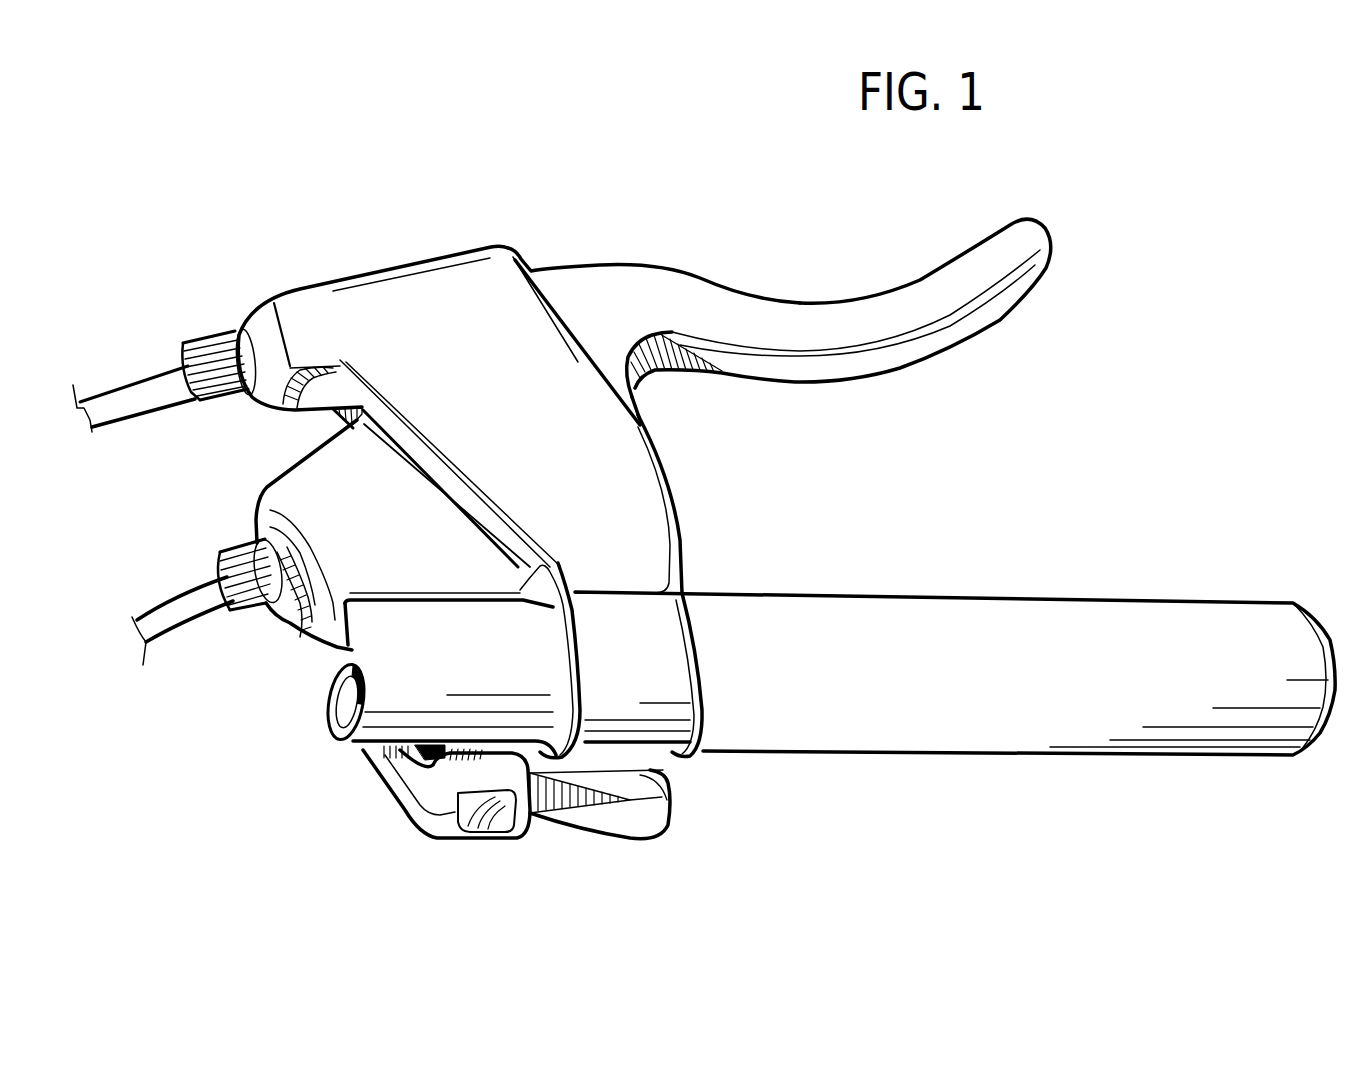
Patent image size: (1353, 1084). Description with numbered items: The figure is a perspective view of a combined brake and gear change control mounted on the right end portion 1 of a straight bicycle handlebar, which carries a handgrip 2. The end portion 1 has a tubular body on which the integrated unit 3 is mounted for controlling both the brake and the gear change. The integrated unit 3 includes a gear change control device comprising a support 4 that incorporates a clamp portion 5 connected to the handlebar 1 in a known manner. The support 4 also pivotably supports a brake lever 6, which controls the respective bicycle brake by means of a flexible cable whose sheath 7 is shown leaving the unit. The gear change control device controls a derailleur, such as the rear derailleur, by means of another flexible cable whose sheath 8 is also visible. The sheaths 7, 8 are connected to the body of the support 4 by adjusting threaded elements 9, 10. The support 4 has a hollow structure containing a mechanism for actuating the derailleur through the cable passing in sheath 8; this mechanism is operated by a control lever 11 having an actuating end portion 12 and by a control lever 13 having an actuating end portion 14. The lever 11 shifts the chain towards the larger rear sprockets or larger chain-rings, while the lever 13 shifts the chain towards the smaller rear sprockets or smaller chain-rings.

The right end portion of a straight handlebar 1 is at (328, 752).
The handgrip 2 is at (1012, 630).
The integrated unit 3 is at (367, 243).
The support 4 is at (613, 497).
The clamp portion 5 is at (660, 643).
The brake lever 6 is at (1013, 295).
The sheath 7 is at (132, 387).
The sheath 8 is at (160, 600).
The adjusting threaded element 9 is at (207, 333).
The adjusting threaded element 10 is at (252, 607).
The control lever 11 is at (633, 846).
The actuating end portion 12 is at (663, 810).
The control lever 13 is at (393, 808).
The actuating end portion 14 is at (483, 812).